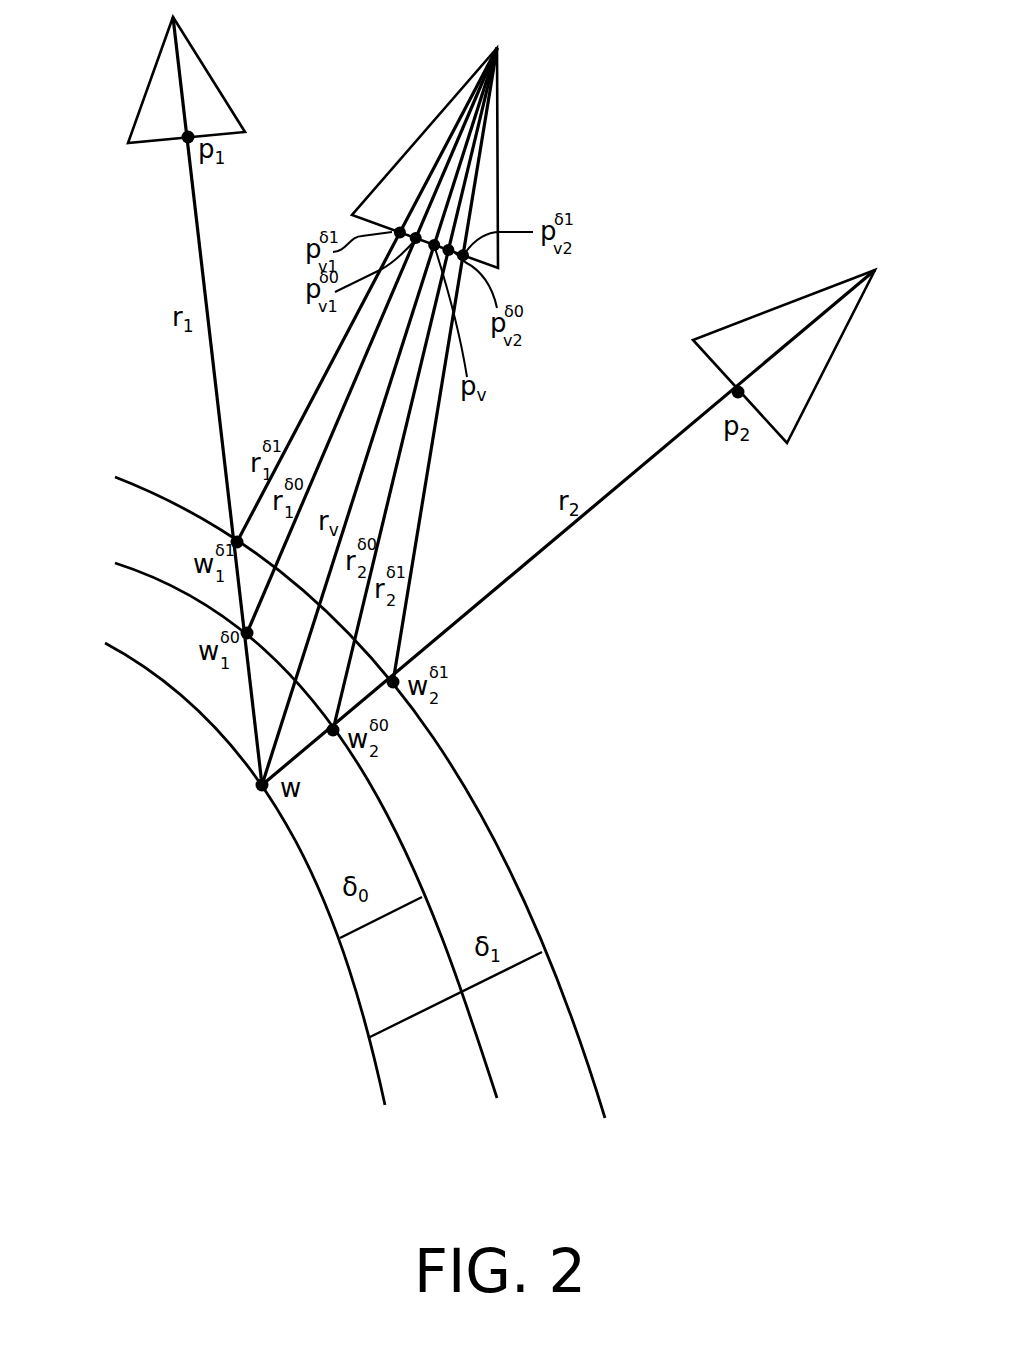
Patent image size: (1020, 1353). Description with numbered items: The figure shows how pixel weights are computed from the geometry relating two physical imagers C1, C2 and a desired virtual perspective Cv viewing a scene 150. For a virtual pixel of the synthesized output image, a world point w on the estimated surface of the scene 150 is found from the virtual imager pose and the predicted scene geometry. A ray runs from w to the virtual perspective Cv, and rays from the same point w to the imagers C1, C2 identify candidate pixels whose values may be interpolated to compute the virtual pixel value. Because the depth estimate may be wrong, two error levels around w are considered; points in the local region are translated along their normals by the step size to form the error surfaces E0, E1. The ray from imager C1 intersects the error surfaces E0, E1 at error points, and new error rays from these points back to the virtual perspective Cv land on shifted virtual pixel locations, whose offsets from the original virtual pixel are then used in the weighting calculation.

The scene 150 is at (404, 826).
The first imager C1 is at (162, 66).
The second imager C2 is at (818, 291).
The virtual perspective Cv is at (425, 158).
The error surface E0 is at (344, 862).
The error surface E1 is at (409, 826).